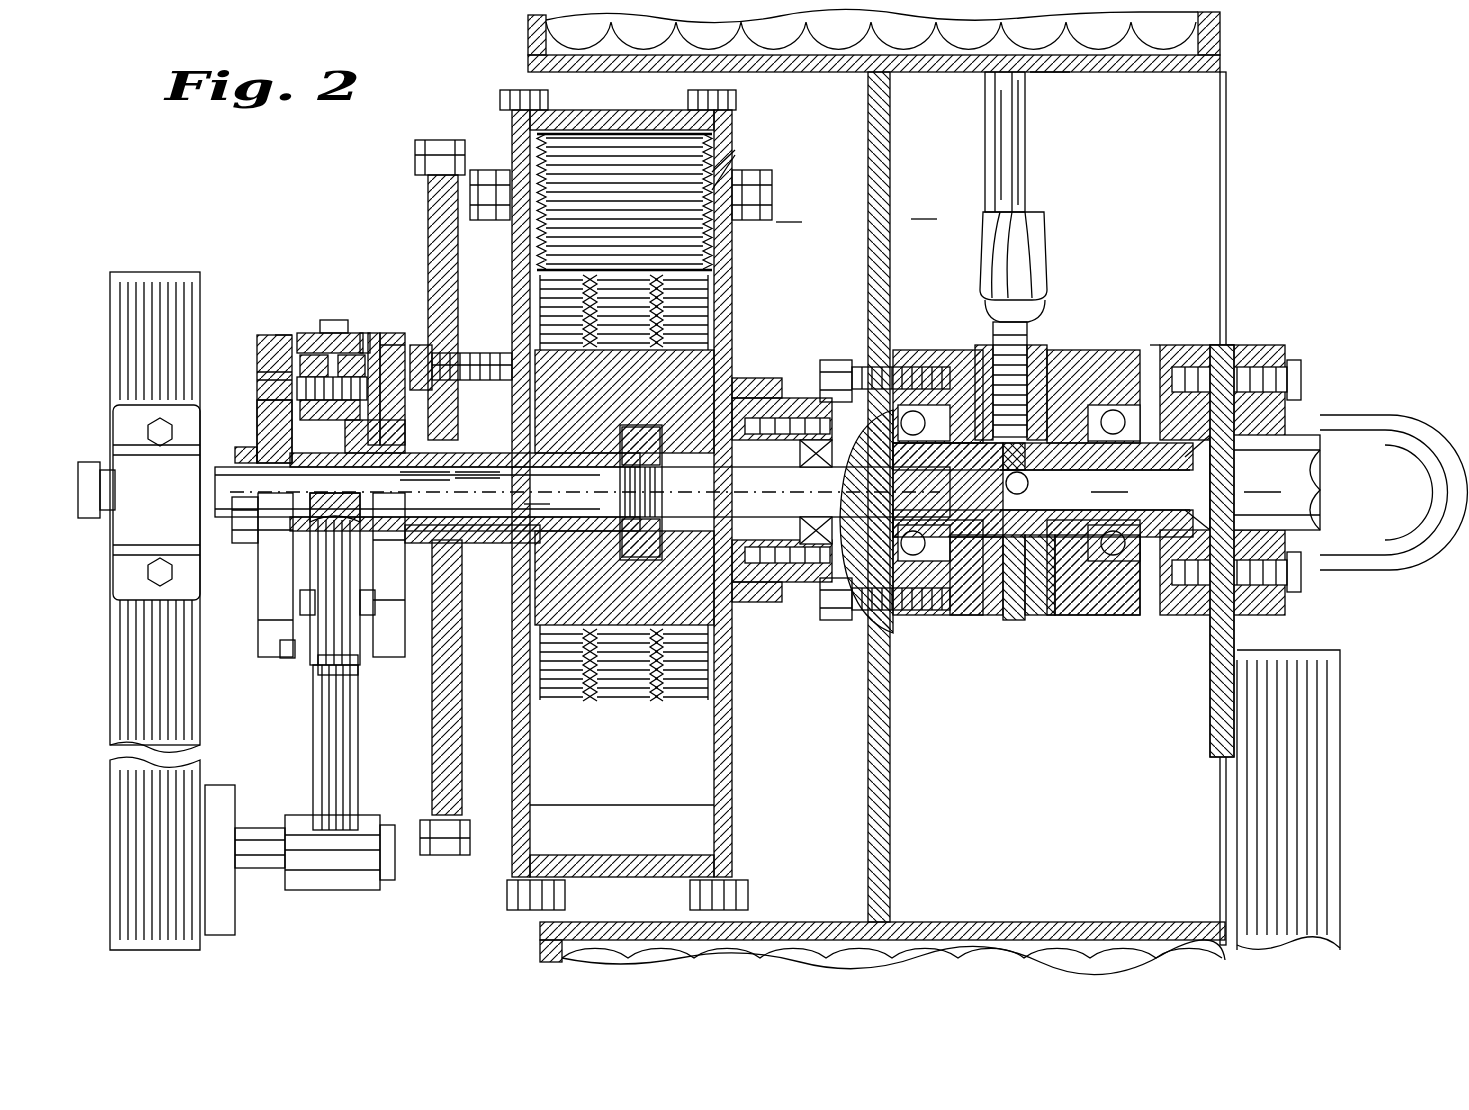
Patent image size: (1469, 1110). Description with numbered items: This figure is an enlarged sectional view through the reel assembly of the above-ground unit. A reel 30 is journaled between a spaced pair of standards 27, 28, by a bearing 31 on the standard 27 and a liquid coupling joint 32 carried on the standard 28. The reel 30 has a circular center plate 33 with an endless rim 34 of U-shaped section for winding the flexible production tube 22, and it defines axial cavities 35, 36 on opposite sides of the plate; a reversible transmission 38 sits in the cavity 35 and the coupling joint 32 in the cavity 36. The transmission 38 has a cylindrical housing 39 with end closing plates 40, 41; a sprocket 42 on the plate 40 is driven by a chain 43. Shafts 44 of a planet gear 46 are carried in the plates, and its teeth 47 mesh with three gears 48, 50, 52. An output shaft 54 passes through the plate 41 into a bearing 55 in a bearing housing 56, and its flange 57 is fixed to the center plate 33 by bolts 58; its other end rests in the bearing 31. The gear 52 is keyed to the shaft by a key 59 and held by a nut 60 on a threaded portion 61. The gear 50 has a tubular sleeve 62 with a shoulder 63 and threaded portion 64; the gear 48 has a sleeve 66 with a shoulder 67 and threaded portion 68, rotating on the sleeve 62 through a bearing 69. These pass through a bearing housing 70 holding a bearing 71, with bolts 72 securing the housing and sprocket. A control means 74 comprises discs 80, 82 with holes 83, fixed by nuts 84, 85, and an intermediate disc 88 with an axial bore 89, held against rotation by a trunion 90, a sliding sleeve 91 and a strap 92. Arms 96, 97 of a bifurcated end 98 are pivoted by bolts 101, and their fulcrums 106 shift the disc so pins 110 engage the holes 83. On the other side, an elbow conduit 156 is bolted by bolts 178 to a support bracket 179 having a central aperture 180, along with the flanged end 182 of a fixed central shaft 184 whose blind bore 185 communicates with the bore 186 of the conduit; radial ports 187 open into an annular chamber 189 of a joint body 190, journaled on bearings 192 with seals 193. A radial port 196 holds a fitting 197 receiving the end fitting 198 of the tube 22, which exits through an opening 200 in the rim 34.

The flexible production tube 22 is at (1025, 120).
The standard 27 is at (135, 275).
The standard 28 is at (1340, 652).
The reel 30 is at (1226, 150).
The bearing 31 is at (115, 445).
The liquid coupling joint 32 is at (1138, 338).
The circular center plate 33 is at (886, 180).
The endless rim 34 is at (918, 72).
The axial cavity 35 is at (789, 211).
The axial cavity 36 is at (924, 208).
The reversible transmission 38 is at (798, 152).
The cylindrical housing 39 is at (597, 108).
The end closing plate 40 is at (512, 135).
The end closing plate 41 is at (732, 132).
The sprocket 42 is at (428, 202).
The chain 43 is at (415, 140).
The shaft 44 is at (513, 176).
The planet gear 46 is at (630, 130).
The teeth 47 is at (741, 163).
The third gear 48 is at (568, 704).
The second gear 50 is at (632, 704).
The gear 52 is at (694, 704).
The output shaft 54 is at (582, 492).
The bearing 55 is at (770, 408).
The bearing housing 56 is at (770, 578).
The flange 57 is at (852, 358).
The bolts 58 is at (830, 362).
The key 59 is at (725, 450).
The nut 60 is at (658, 492).
The threaded portion 61 is at (620, 478).
The tubular sleeve 62 is at (477, 479).
The shoulder 63 is at (274, 431).
The threaded portion 64 is at (240, 447).
The sleeve 66 is at (425, 479).
The shoulder 67 is at (465, 472).
The threaded portion 68 is at (465, 499).
The bearing 69 is at (478, 352).
The bearing housing 70 is at (466, 640).
The bearing 71 is at (392, 642).
The bolts 72 is at (392, 333).
The control means 74 is at (286, 325).
The disc 80 is at (272, 335).
The disc 82 is at (375, 333).
The holes 83 is at (388, 345).
The nut 84 is at (245, 543).
The nut 85 is at (348, 443).
The intermediate disc 88 is at (310, 333).
The axial bore 89 is at (300, 420).
The trunion 90 is at (250, 828).
The sleeve 91 is at (310, 818).
The strap 92 is at (318, 715).
The arm 96 is at (338, 320).
The arm 97 is at (322, 666).
The bifurcated end 98 is at (258, 578).
The bolts 101 is at (330, 330).
The fulcrum 106 is at (362, 340).
The pins 110 is at (297, 385).
The elbow conduit 156 is at (1385, 415).
The bolts 178 is at (1301, 375).
The support bracket 179 is at (1210, 674).
The central aperture 180 is at (1212, 522).
The flanged end 182 is at (1168, 345).
The fixed central shaft 184 is at (990, 600).
The blind bore 185 is at (1043, 490).
The bore 186 is at (1265, 482).
The radial ports 187 is at (1028, 483).
The annular chamber 189 is at (1015, 620).
The joint body 190 is at (1110, 600).
The bearings 192 is at (918, 370).
The seals 193 is at (960, 612).
The radial port 196 is at (1050, 347).
The fitting 197 is at (1032, 335).
The end fitting 198 is at (1040, 295).
The opening 200 is at (1044, 72).